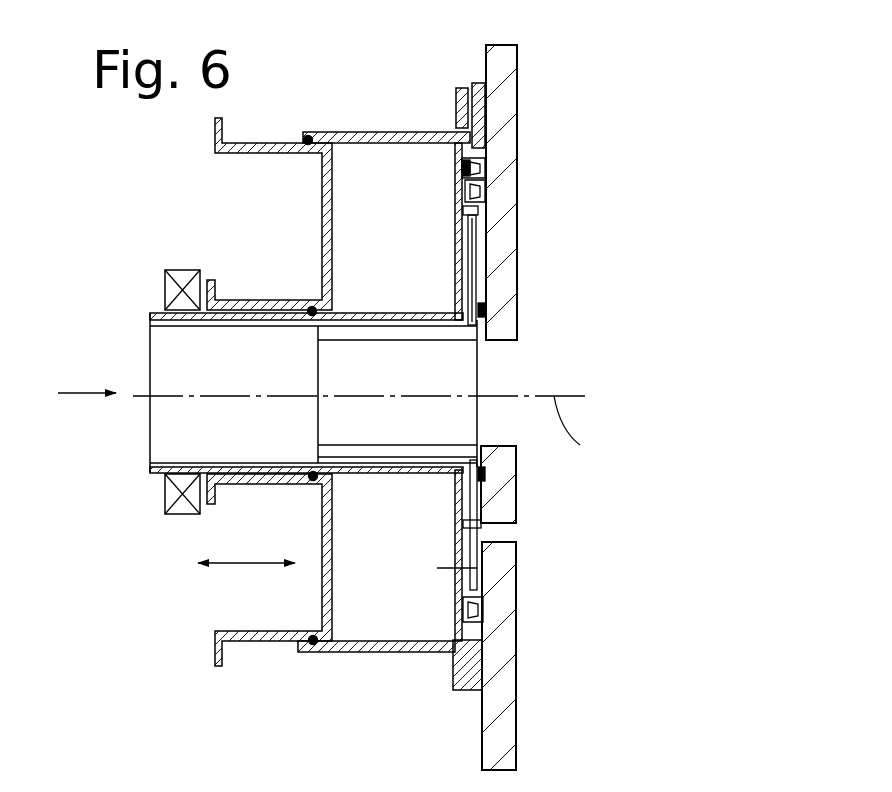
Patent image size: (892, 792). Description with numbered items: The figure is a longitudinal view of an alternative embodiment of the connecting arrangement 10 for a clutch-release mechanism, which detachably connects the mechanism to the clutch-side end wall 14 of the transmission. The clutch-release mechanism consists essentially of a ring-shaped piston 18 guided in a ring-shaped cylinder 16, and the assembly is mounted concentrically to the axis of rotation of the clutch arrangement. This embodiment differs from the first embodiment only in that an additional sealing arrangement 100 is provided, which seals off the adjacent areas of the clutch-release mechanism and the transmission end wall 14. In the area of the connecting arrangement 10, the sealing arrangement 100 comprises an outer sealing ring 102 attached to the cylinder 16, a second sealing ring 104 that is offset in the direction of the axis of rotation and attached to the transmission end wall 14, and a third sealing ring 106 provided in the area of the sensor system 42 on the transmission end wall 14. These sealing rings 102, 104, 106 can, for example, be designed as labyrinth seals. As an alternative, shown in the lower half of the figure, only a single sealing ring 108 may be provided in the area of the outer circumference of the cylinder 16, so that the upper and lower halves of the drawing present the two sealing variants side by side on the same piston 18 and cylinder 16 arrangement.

The connecting arrangement 10 is at (628, 70).
The end wall 14 is at (505, 672).
The cylinder 16 is at (358, 652).
The piston 18 is at (252, 640).
The sensor system 42 is at (314, 438).
The sealing arrangement 100 is at (590, 387).
The outer sealing ring 102 is at (484, 166).
The second sealing ring 104 is at (486, 196).
The third sealing ring 106 is at (486, 312).
The single sealing ring 108 is at (484, 606).